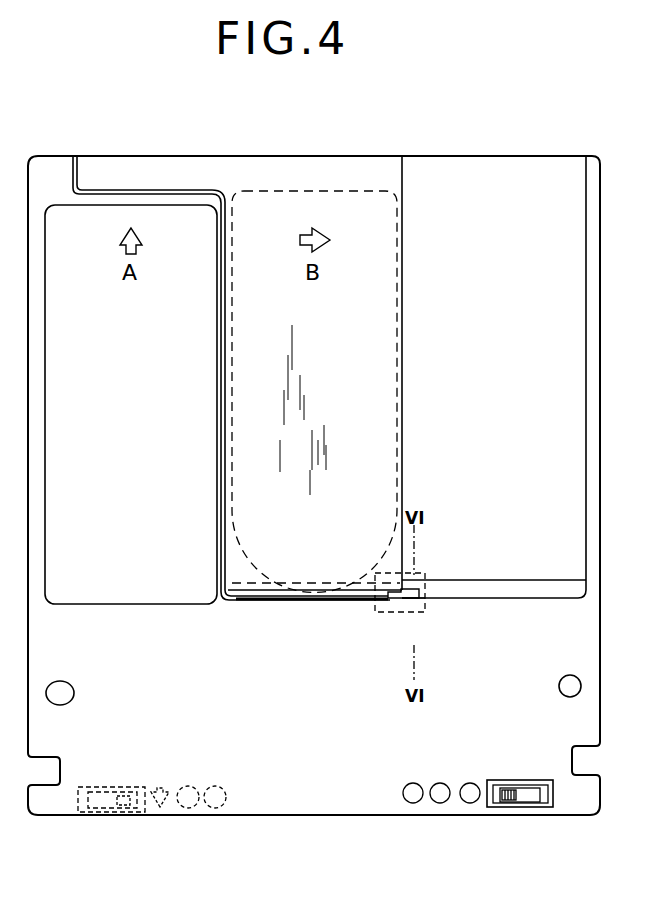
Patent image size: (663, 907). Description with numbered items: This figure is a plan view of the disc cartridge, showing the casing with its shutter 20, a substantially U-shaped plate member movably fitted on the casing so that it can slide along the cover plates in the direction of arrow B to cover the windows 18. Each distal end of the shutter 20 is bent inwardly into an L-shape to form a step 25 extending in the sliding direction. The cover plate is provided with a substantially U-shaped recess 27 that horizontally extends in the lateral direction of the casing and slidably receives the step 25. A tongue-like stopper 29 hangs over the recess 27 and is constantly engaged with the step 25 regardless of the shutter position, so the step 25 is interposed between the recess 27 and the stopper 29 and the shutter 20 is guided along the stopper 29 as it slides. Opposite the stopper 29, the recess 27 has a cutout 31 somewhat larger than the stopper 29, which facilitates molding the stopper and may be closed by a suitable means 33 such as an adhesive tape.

The window 18 is at (352, 190).
The shutter 20 is at (403, 286).
The step 25 is at (352, 600).
The recess 27 is at (517, 599).
The stopper 29 is at (406, 600).
The cutout 31 is at (406, 580).
The means for closing the cutout 33 is at (425, 606).